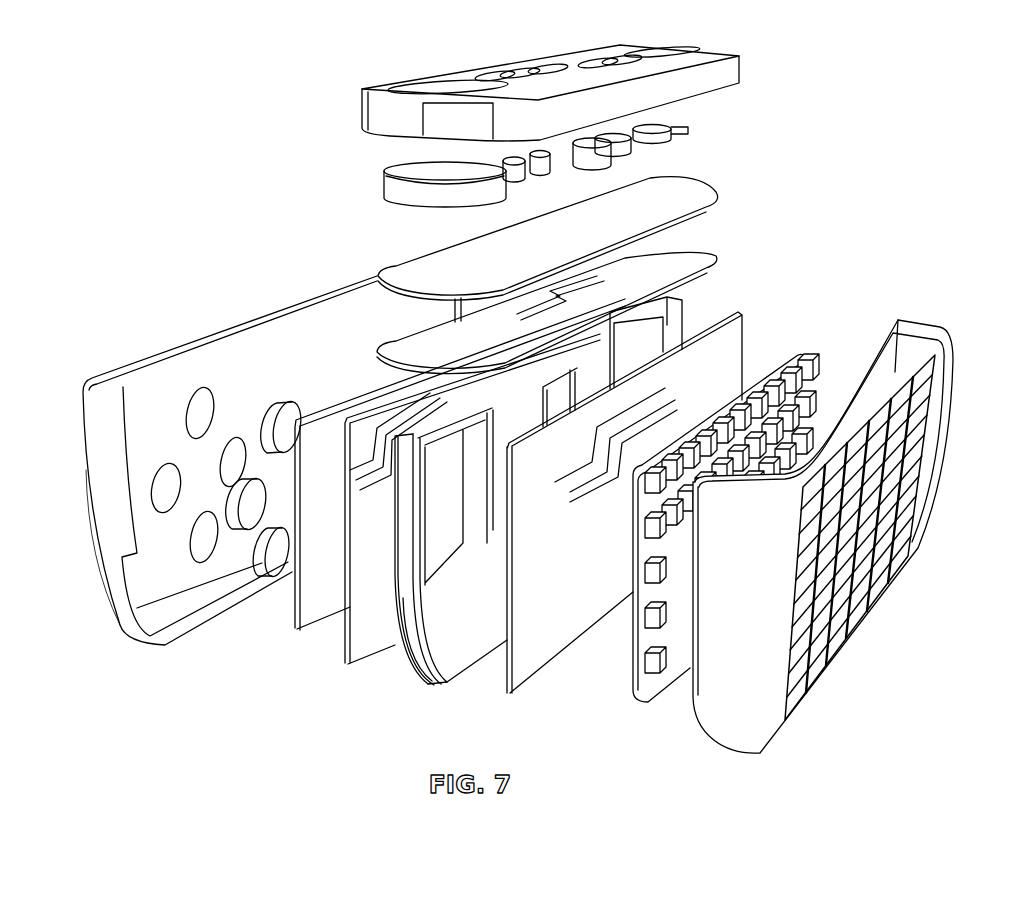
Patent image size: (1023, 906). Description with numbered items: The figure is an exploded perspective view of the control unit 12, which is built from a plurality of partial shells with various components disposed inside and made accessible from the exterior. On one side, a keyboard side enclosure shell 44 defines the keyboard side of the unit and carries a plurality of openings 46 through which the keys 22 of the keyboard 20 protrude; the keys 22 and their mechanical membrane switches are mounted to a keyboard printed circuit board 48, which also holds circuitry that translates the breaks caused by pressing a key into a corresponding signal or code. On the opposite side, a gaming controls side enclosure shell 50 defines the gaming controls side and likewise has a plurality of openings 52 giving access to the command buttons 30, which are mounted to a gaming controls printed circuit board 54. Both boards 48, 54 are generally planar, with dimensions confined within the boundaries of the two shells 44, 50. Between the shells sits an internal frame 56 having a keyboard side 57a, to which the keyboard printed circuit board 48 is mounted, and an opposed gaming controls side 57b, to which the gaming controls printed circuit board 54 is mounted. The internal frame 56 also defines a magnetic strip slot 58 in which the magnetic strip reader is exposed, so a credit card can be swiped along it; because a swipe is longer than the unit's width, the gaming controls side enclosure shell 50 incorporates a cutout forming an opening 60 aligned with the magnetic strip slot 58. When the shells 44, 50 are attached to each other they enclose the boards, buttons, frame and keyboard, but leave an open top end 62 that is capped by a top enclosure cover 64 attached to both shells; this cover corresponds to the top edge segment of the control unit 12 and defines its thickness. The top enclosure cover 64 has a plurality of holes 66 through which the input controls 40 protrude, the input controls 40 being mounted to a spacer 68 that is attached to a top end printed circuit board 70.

The control unit 12 is at (194, 113).
The keyboard 20 is at (738, 491).
The keys 22 is at (819, 372).
The command buttons 30 is at (263, 568).
The input controls 40 is at (384, 181).
The keyboard side enclosure shell 44 is at (823, 563).
The openings 46 is at (903, 557).
The keyboard printed circuit board 48 is at (525, 690).
The gaming controls side enclosure shell 50 is at (134, 638).
The openings 52 is at (205, 548).
The gaming controls printed circuit board 54 is at (352, 632).
The internal frame 56 is at (400, 582).
The keyboard side 57a is at (459, 672).
The gaming controls side 57b is at (399, 680).
The magnetic strip slot 58 is at (425, 692).
The opening 60 is at (118, 637).
The open top end 62 is at (489, 476).
The top enclosure cover 64 is at (582, 77).
The holes 66 is at (500, 73).
The spacer 68 is at (712, 197).
The top end printed circuit board 70 is at (712, 258).